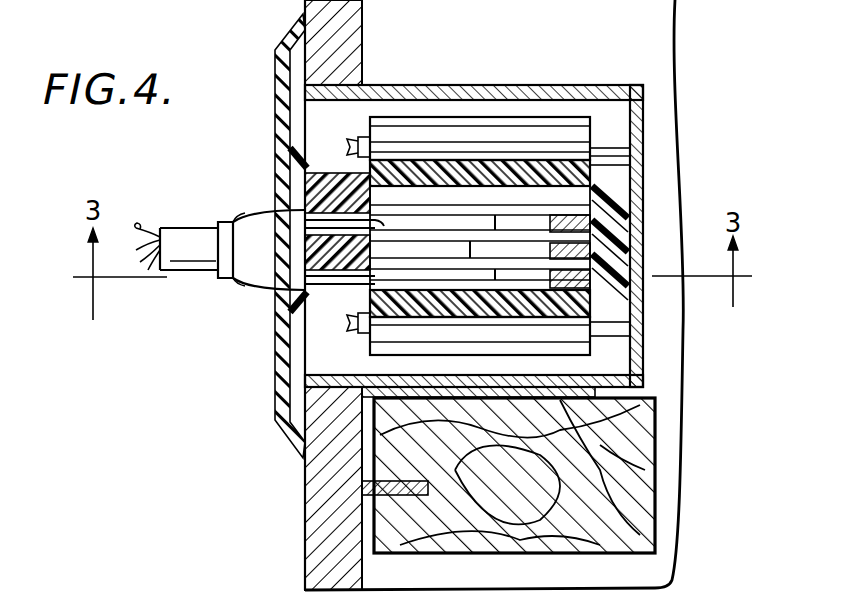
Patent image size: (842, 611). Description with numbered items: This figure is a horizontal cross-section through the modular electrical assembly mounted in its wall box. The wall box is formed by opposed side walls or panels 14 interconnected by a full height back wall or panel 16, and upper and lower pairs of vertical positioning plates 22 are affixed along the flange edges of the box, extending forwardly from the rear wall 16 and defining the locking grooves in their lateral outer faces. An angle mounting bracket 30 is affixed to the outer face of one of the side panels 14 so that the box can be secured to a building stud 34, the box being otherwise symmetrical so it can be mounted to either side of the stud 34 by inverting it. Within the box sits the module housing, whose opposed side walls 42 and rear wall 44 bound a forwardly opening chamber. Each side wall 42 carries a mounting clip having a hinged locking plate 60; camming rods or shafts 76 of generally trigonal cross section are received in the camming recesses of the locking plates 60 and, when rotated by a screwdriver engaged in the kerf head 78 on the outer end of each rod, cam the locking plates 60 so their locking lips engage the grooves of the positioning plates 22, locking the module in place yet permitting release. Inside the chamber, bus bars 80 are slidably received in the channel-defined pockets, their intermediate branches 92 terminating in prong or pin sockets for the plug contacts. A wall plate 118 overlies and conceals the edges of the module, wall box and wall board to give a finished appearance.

The side walls or panels 14 is at (545, 85).
The back wall or panel 16 is at (632, 163).
The vertical positioning plates 22 is at (600, 144).
The angle mounting bracket 30 is at (360, 498).
The building stud 34 is at (478, 553).
The side walls 42 is at (548, 308).
The rear wall 44 is at (630, 192).
The locking plate 60 is at (470, 117).
The camming rods or shafts 76 is at (356, 335).
The kerf head 78 is at (350, 142).
The bus bars 80 is at (618, 235).
The intermediate branches 92 is at (305, 272).
The wall plate 118 is at (272, 358).